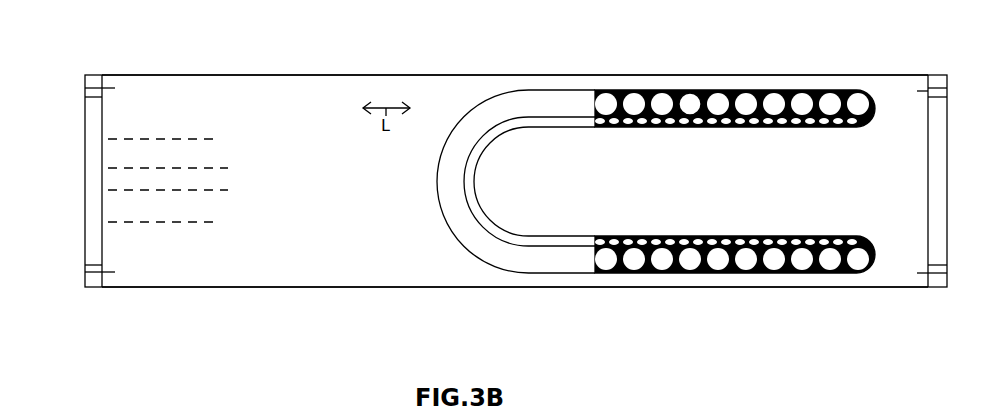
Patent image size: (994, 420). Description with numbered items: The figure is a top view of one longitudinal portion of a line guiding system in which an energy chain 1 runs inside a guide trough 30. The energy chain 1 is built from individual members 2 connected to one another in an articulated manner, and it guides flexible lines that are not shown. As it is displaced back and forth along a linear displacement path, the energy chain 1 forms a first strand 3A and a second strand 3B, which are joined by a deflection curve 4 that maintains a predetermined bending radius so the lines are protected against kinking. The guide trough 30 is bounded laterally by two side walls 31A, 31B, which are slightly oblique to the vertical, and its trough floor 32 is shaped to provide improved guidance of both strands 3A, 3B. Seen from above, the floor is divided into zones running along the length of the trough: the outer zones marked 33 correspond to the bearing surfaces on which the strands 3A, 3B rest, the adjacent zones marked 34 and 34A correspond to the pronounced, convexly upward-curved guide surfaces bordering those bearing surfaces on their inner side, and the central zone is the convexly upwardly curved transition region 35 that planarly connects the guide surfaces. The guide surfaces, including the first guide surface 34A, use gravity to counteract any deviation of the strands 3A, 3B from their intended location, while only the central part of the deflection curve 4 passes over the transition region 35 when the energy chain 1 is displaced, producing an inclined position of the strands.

The energy chain 1 is at (666, 180).
The members 2 is at (696, 100).
The first strand 3A is at (733, 137).
The second strand 3B is at (775, 226).
The deflection curve 4 is at (493, 207).
The guide trough 30 is at (826, 62).
The first side wall 31A is at (285, 96).
The second side wall 31B is at (258, 282).
The trough floor 32 is at (287, 187).
The end region 33 is at (78, 78).
The intermediate region 34 is at (78, 200).
The first guide surface 34A is at (78, 124).
The transition region 35 is at (78, 160).